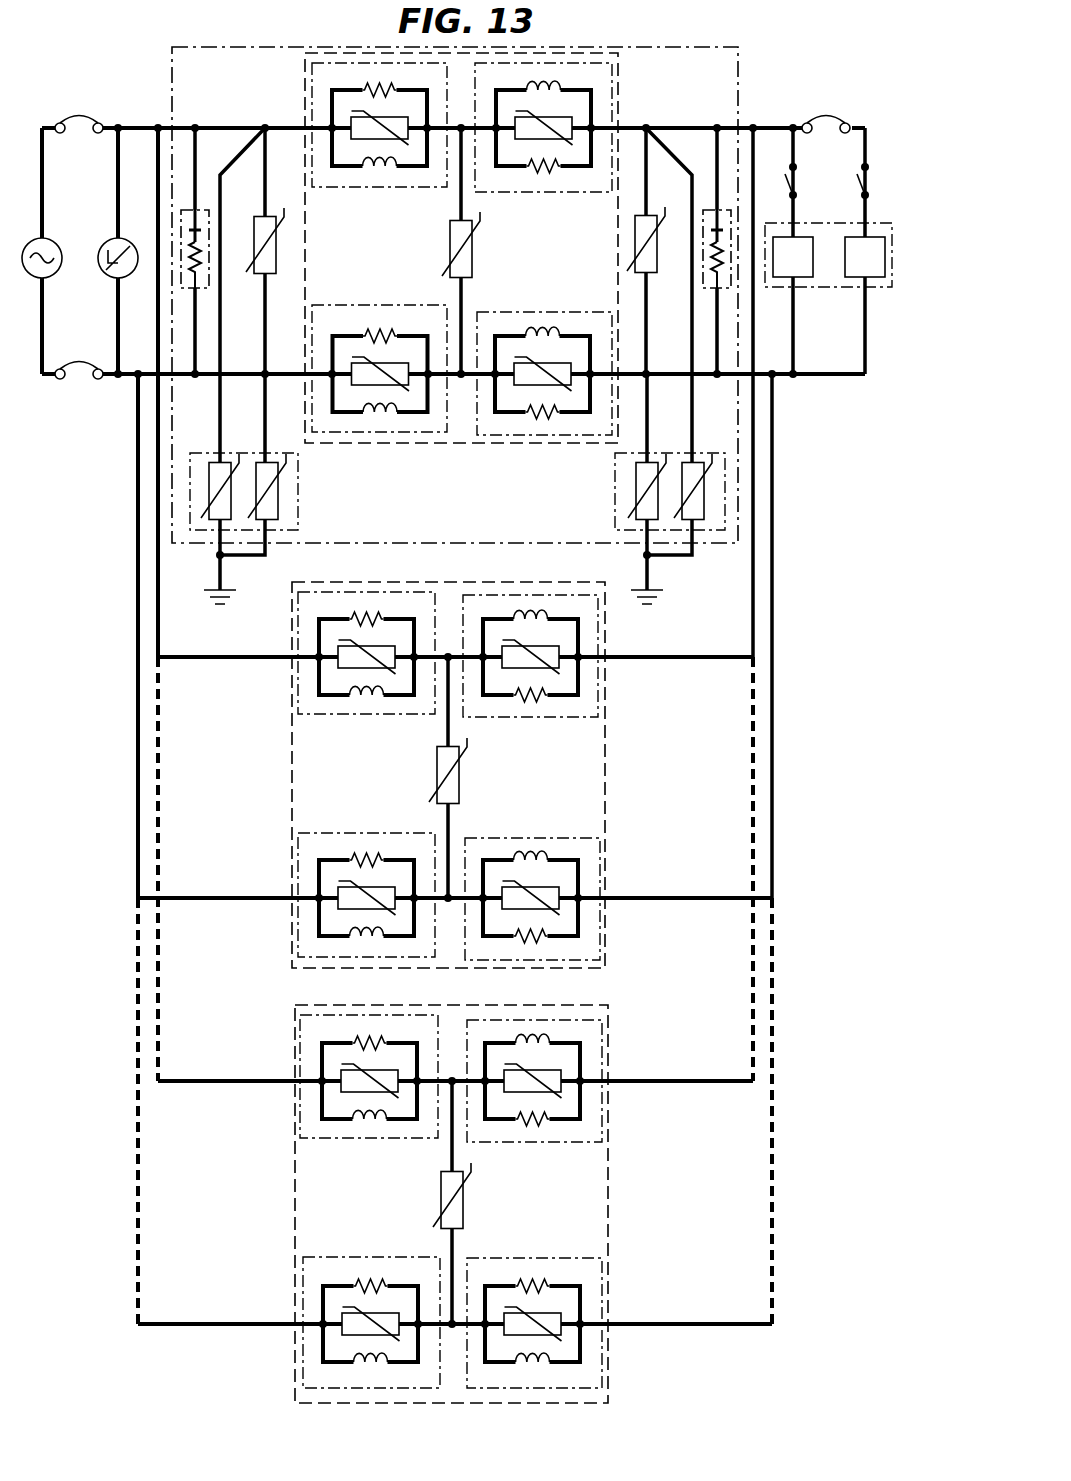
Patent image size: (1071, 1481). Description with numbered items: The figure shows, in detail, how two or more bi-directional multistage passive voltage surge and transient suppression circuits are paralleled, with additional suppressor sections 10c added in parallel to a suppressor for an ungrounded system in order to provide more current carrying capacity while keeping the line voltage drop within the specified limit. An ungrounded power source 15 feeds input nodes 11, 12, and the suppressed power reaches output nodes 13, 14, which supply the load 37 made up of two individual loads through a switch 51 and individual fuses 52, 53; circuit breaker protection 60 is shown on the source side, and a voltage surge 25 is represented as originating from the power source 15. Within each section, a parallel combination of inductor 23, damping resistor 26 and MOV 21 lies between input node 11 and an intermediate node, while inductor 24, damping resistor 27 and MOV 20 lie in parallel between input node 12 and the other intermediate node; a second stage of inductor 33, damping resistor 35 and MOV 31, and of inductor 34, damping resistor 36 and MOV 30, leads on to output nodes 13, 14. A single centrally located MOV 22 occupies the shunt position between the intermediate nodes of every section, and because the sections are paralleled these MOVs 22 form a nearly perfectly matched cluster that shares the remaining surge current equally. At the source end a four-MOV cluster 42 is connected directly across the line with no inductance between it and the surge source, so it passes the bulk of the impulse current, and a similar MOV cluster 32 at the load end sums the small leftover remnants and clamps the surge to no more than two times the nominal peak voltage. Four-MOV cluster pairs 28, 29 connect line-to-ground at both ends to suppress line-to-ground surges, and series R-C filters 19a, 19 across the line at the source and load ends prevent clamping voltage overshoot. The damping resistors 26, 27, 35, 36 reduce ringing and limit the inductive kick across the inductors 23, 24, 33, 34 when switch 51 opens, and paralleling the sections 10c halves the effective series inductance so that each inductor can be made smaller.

The additional surge suppressor 10c is at (561, 47).
The input node 11 is at (157, 127).
The input node 12 is at (136, 377).
The output node 13 is at (754, 126).
The output node 14 is at (775, 377).
The power source 15 is at (49, 237).
The series R-C filter 19 is at (714, 210).
The series R-C filter 19a is at (196, 210).
The MOV 20 is at (333, 365).
The MOV 21 is at (335, 120).
The MOV 22 is at (474, 250).
The inductor 23 is at (392, 90).
The inductor 24 is at (380, 420).
The voltage surge 25 is at (109, 278).
The damping resistor 26 is at (381, 172).
The damping resistor 27 is at (390, 330).
The four-MOV cluster pair 28 is at (300, 490).
The four-MOV cluster pair 29 is at (615, 493).
The MOV 30 is at (570, 358).
The MOV 31 is at (583, 121).
The MOV cluster 32 is at (634, 243).
The inductor 33 is at (533, 90).
The inductor 34 is at (538, 418).
The damping resistor 35 is at (534, 172).
The damping resistor 36 is at (530, 332).
The load 37 is at (830, 288).
The MOV cluster 42 is at (258, 277).
The switch 51 is at (827, 118).
The fuse 52 is at (800, 178).
The fuse 53 is at (868, 178).
The circuit breaker protection 60 is at (78, 362).